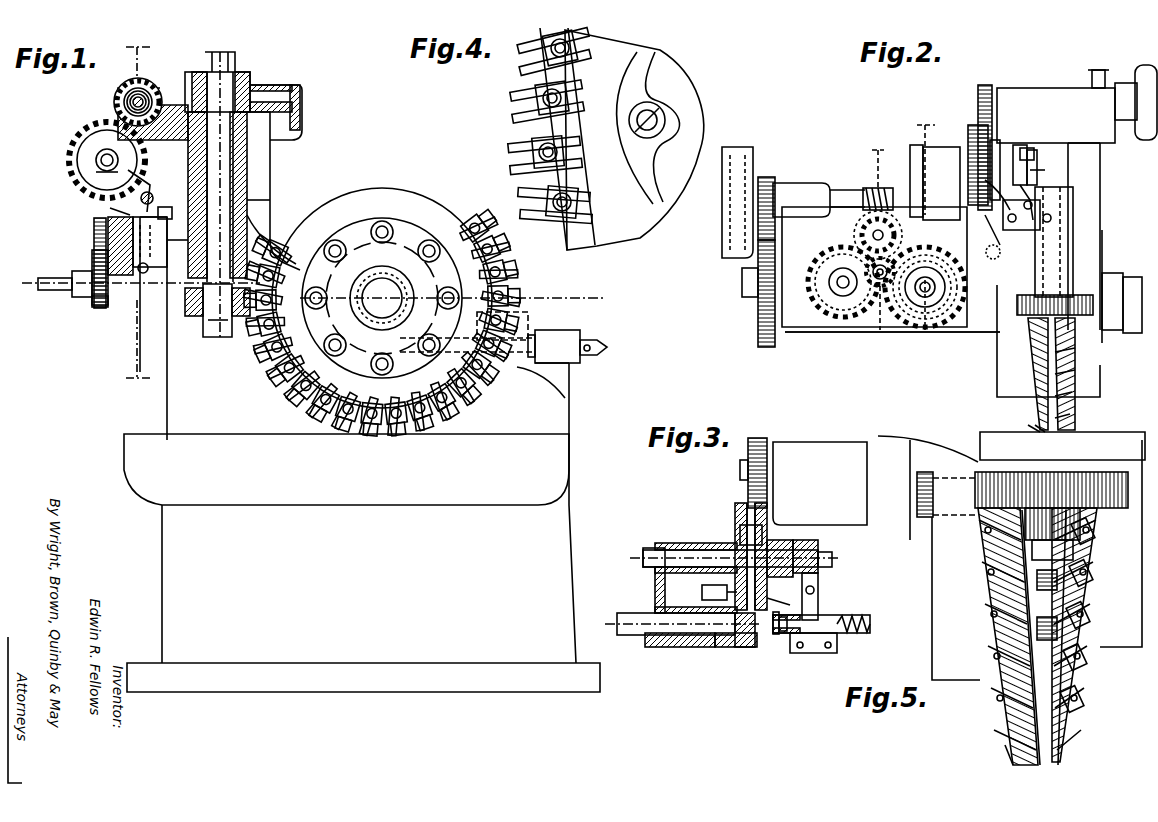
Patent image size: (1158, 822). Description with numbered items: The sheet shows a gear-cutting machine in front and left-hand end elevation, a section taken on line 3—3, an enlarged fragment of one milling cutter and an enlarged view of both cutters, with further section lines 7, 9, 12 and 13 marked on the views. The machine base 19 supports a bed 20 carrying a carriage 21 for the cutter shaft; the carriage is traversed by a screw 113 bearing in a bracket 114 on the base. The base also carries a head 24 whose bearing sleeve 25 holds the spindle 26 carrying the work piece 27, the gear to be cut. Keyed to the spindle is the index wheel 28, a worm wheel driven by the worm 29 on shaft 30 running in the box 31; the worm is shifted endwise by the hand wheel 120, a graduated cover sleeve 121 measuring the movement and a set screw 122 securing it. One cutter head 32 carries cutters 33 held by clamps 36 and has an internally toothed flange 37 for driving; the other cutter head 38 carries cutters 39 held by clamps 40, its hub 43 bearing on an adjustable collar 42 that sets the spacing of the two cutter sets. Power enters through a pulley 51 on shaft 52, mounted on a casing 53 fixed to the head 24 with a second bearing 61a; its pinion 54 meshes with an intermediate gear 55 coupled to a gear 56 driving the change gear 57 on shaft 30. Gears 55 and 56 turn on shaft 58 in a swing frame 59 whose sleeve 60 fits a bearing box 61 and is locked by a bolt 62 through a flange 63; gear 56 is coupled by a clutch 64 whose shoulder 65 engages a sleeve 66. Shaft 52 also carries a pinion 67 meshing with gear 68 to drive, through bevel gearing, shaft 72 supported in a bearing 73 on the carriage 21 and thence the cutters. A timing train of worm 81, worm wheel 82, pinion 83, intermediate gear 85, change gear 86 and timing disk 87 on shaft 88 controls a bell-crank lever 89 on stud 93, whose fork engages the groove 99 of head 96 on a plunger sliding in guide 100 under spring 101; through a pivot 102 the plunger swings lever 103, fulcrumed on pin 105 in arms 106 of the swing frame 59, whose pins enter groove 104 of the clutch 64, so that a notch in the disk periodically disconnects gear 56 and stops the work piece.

In FIG. 1, the section line 3 is at (177, 255).
In FIG. 1, the section line 7 is at (315, 293).
In FIG. 1, the section line 9 is at (139, 213).
In FIG. 2, the section line 12 is at (876, 162).
In FIG. 2, the section line 13 is at (926, 162).
In FIG. 1, the machine base 19 is at (175, 546).
In FIG. 1, the bed 20 is at (569, 400).
In FIG. 1, the carriage 21 is at (522, 312).
In FIG. 1, the head 24 is at (258, 172).
In FIG. 2, the head 24 is at (1075, 172).
In FIG. 1, the bearing sleeve 25 is at (248, 200).
In FIG. 1, the spindle 26 is at (248, 222).
In FIG. 1, the work piece 27 is at (195, 318).
In FIG. 2, the work piece 27 is at (1086, 297).
In FIG. 5, the work piece 27 is at (1110, 506).
In FIG. 1, the index wheel 28 is at (286, 90).
In FIG. 1, the worm 29 is at (148, 97).
In FIG. 1, the shaft 30 is at (128, 90).
In FIG. 1, the box 31 is at (118, 100).
In FIG. 2, the box 31 is at (1050, 100).
In FIG. 3, the box 31 is at (857, 470).
In FIG. 5, the cutter head 32 is at (1050, 660).
In FIG. 2, the cutters 33 is at (1040, 428).
In FIG. 5, the cutters 33 is at (1010, 748).
In FIG. 2, the clamps 36 is at (1036, 392).
In FIG. 5, the clamps 36 is at (990, 565).
In FIG. 2, the flange 37 is at (1000, 340).
In FIG. 5, the flange 37 is at (935, 555).
In FIG. 1, the cutter head 38 is at (384, 210).
In FIG. 4, the cutter head 38 is at (655, 45).
In FIG. 5, the cutter head 38 is at (1050, 690).
In FIG. 1, the cutters 39 is at (300, 396).
In FIG. 4, the cutters 39 is at (510, 115).
In FIG. 2, the cutters 39 is at (1068, 425).
In FIG. 5, the cutters 39 is at (1078, 590).
In FIG. 1, the cutter-holding clamps 40 is at (280, 368).
In FIG. 4, the cutter-holding clamps 40 is at (548, 200).
In FIG. 2, the cutter-holding clamps 40 is at (1072, 392).
In FIG. 5, the cutter-holding clamps 40 is at (1085, 628).
In FIG. 1, the adjustable collar 42 is at (382, 282).
In FIG. 2, the adjustable collar 42 is at (1132, 282).
In FIG. 2, the hub 43 is at (1110, 272).
In FIG. 1, the pulley 51 is at (110, 208).
In FIG. 2, the pulley 51 is at (736, 150).
In FIG. 2, the shaft 52 is at (842, 188).
In FIG. 3, the shaft 52 is at (626, 615).
In FIG. 1, the casing 53 is at (140, 318).
In FIG. 2, the casing 53 is at (814, 330).
In FIG. 1, the pinion 54 is at (135, 240).
In FIG. 3, the pinion 54 is at (745, 648).
In FIG. 2, the intermediate gear 55 is at (975, 135).
In FIG. 3, the intermediate gear 55 is at (745, 505).
In FIG. 1, the gear 56 is at (77, 160).
In FIG. 2, the gear 56 is at (1000, 150).
In FIG. 3, the gear 56 is at (765, 530).
In FIG. 1, the change gear 57 is at (106, 122).
In FIG. 2, the change gear 57 is at (986, 90).
In FIG. 3, the change gear 57 is at (757, 437).
In FIG. 3, the shaft 58 is at (692, 545).
In FIG. 2, the swing frame 59 is at (912, 150).
In FIG. 3, the swing frame 59 is at (702, 550).
In FIG. 3, the sleeve 60 is at (665, 648).
In FIG. 1, the bearing box 61 is at (96, 172).
In FIG. 3, the bearing box 61 is at (720, 648).
In FIG. 2, the second bearing 61a is at (812, 172).
In FIG. 3, the bolt 62 is at (705, 590).
In FIG. 2, the flange 63 is at (948, 150).
In FIG. 3, the flange 63 is at (680, 570).
In FIG. 2, the clutch 64 is at (1036, 165).
In FIG. 3, the clutch 64 is at (806, 545).
In FIG. 2, the tooth or shoulder 65 is at (1045, 162).
In FIG. 2, the sleeve 66 is at (1020, 160).
In FIG. 3, the sleeve 66 is at (780, 545).
In FIG. 2, the pinion 67 is at (768, 178).
In FIG. 2, the gear 68 is at (757, 336).
In FIG. 1, the shaft 72 is at (50, 278).
In FIG. 2, the shaft 72 is at (877, 332).
In FIG. 2, the bearing 73 is at (925, 332).
In FIG. 2, the worm 81 is at (868, 190).
In FIG. 2, the worm wheel 82 is at (856, 228).
In FIG. 1, the pinion 83 is at (94, 230).
In FIG. 2, the pinion 83 is at (892, 232).
In FIG. 1, the intermediate gear 85 is at (96, 266).
In FIG. 2, the intermediate gear 85 is at (845, 320).
In FIG. 1, the change gear 86 is at (100, 306).
In FIG. 2, the change gear 86 is at (935, 320).
In FIG. 2, the timing disk 87 is at (915, 290).
In FIG. 2, the shaft 88 is at (882, 290).
In FIG. 2, the lever 89 is at (1000, 258).
In FIG. 1, the stud 93 is at (145, 273).
In FIG. 2, the stud 93 is at (992, 259).
In FIG. 3, the head 96 is at (776, 635).
In FIG. 1, the groove 99 is at (165, 219).
In FIG. 3, the groove 99 is at (783, 635).
In FIG. 3, the guide 100 is at (860, 617).
In FIG. 3, the spring 101 is at (840, 645).
In FIG. 3, the pivot 102 is at (820, 653).
In FIG. 1, the lever 103 is at (141, 198).
In FIG. 2, the lever 103 is at (1032, 225).
In FIG. 3, the lever 103 is at (830, 615).
In FIG. 2, the groove 104 is at (1040, 150).
In FIG. 3, the groove 104 is at (826, 552).
In FIG. 1, the pin 105 is at (217, 196).
In FIG. 2, the pin 105 is at (1031, 200).
In FIG. 3, the pin 105 is at (818, 590).
In FIG. 1, the arms 106 is at (128, 212).
In FIG. 2, the arms 106 is at (984, 214).
In FIG. 3, the arms 106 is at (780, 592).
In FIG. 1, the screw 113 is at (604, 348).
In FIG. 1, the bracket 114 is at (556, 332).
In FIG. 2, the adjusting hand wheel 120 is at (1145, 140).
In FIG. 2, the cover sleeve 121 is at (1125, 85).
In FIG. 2, the set screw 122 is at (1098, 68).